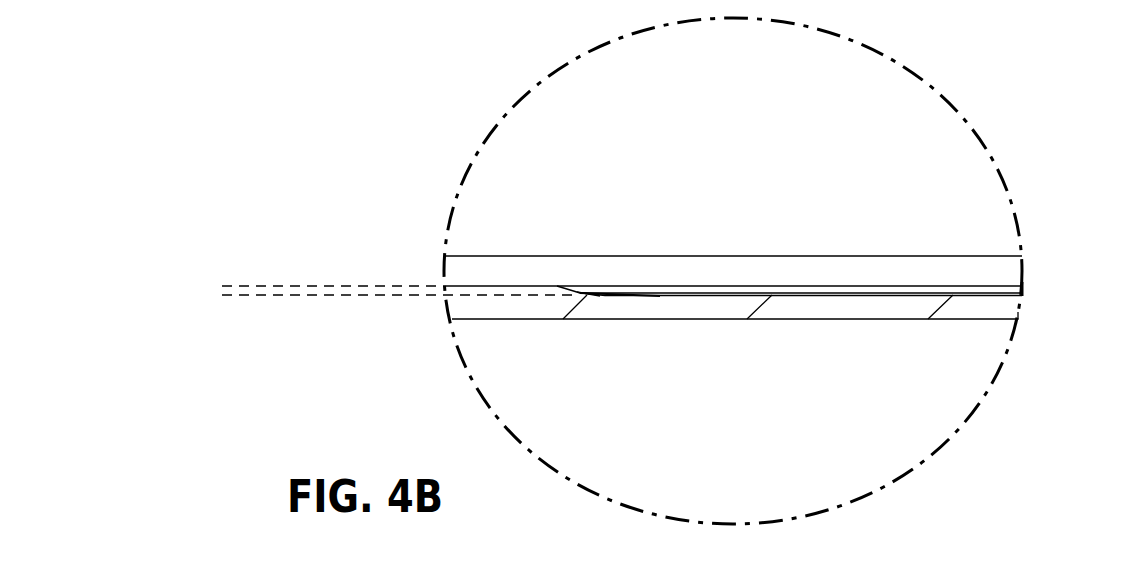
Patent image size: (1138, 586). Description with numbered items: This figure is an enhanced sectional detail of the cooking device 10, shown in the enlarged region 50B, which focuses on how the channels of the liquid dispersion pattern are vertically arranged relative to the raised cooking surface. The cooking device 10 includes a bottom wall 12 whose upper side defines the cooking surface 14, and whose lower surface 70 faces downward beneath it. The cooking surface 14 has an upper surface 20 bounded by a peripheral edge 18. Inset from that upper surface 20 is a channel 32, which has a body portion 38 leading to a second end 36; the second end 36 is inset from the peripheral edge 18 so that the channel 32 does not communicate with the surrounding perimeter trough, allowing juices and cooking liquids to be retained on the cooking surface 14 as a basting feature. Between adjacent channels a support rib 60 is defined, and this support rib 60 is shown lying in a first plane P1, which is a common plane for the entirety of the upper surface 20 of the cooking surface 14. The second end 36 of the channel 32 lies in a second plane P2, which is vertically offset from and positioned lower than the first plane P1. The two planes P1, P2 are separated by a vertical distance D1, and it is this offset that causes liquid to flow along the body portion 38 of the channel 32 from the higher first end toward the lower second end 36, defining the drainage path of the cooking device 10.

The cooking device 10 is at (898, 366).
The bottom wall 12 is at (983, 308).
The cooking surface 14 is at (966, 250).
The peripheral edge 18 is at (753, 256).
The upper surface 20 is at (915, 272).
The channel 32 is at (610, 276).
The second end 36 is at (573, 288).
The body portion 38 is at (655, 293).
The support rib 60 is at (810, 262).
The lower surface 70 is at (595, 319).
The detail region 50B is at (712, 184).
The first plane P1 is at (218, 345).
The second plane P2 is at (198, 349).
The vertical distance D1 is at (317, 235).